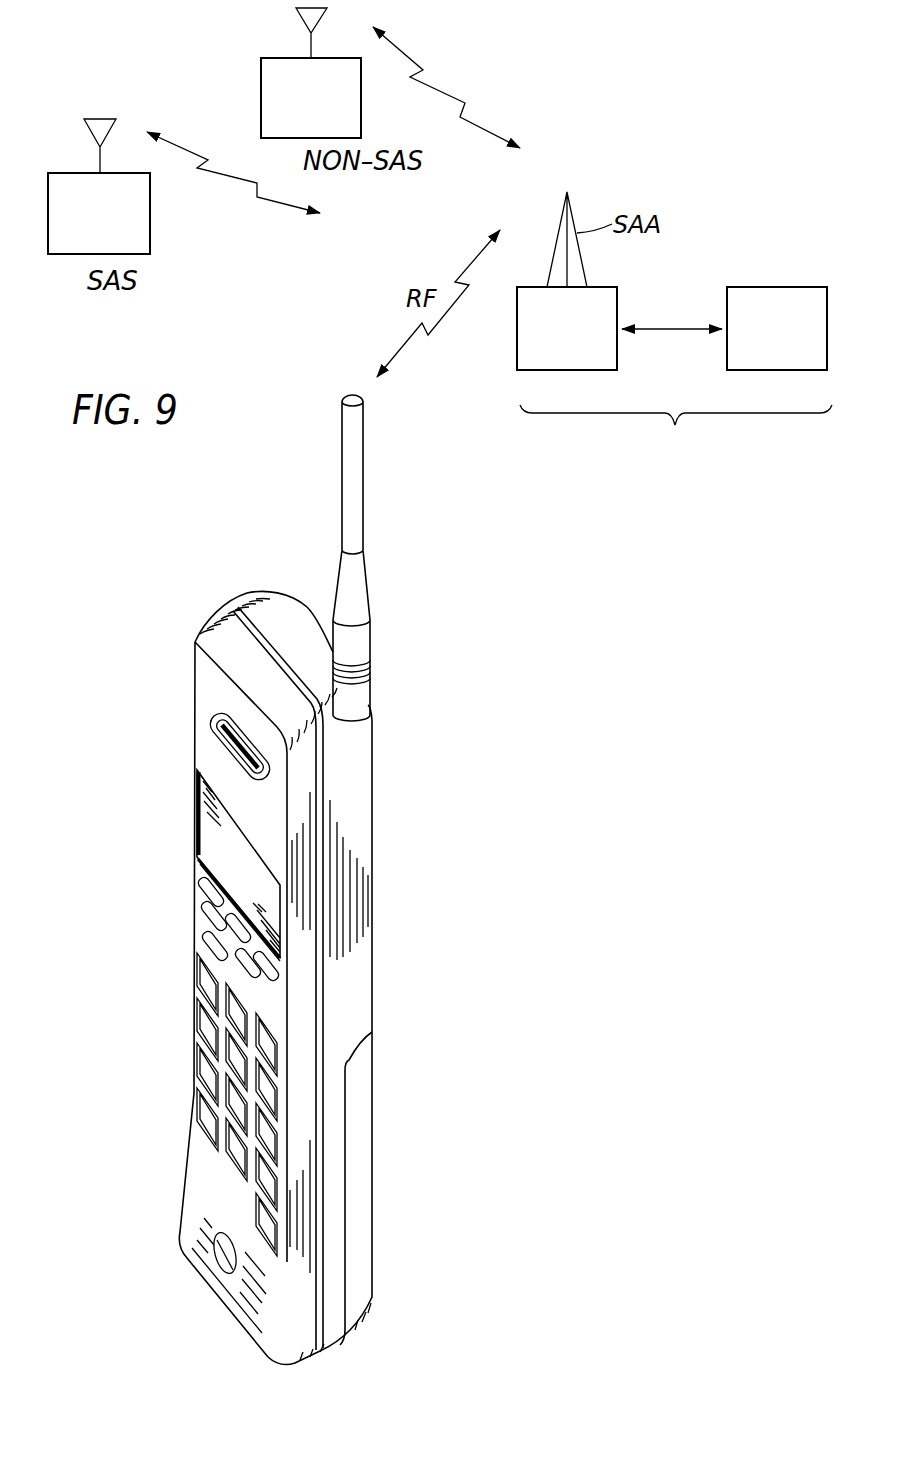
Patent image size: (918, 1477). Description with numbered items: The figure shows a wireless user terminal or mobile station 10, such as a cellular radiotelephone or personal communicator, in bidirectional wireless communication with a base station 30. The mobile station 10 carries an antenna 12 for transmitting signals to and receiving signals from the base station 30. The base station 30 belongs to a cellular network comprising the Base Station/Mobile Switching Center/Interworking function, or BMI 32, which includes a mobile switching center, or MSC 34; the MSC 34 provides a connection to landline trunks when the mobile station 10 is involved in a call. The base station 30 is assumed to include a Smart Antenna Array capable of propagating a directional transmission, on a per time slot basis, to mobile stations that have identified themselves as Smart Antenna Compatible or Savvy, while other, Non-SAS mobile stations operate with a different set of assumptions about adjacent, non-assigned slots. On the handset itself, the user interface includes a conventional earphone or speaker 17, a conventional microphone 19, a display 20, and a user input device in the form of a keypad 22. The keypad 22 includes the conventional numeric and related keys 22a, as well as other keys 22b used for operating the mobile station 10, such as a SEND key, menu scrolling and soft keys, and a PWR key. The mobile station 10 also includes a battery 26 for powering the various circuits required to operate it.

The mobile station 10 is at (78, 255).
The antenna 12 is at (352, 502).
The speaker 17 is at (230, 730).
The microphone 19 is at (218, 1258).
The display 20 is at (213, 845).
The keypad 22 is at (283, 1113).
The numeric and related keys 22a is at (197, 1093).
The other keys 22b is at (210, 940).
The battery 26 is at (357, 1212).
The base station 30 is at (558, 372).
The Base Station/Mobile Switching Center/Interworking function (BMI) 32 is at (676, 406).
The mobile switching center (MSC) 34 is at (773, 287).